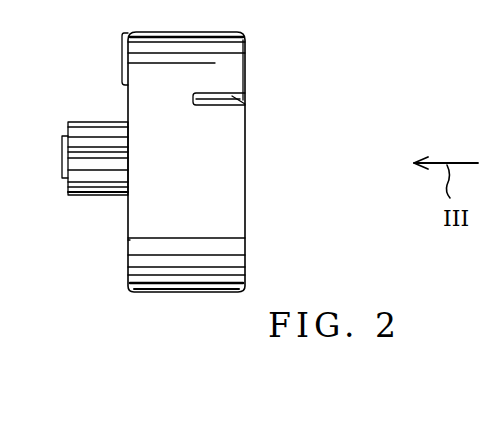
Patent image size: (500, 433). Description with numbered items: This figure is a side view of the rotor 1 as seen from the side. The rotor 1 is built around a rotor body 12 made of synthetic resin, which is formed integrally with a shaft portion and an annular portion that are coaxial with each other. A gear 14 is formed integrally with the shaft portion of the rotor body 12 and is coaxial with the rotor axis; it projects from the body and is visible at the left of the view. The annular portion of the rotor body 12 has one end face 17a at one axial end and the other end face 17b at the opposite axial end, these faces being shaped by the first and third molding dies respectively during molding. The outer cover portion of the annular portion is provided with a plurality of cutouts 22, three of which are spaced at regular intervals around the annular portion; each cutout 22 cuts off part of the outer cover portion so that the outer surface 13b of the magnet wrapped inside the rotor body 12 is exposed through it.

The rotor 1 is at (211, 166).
The rotor body 12 is at (252, 187).
The outer surface of the magnet 13b is at (222, 101).
The gear 14 is at (94, 197).
The one end face of the annular portion 17a is at (245, 252).
The other end face of the annular portion 17b is at (127, 240).
The cutouts 22 is at (245, 99).